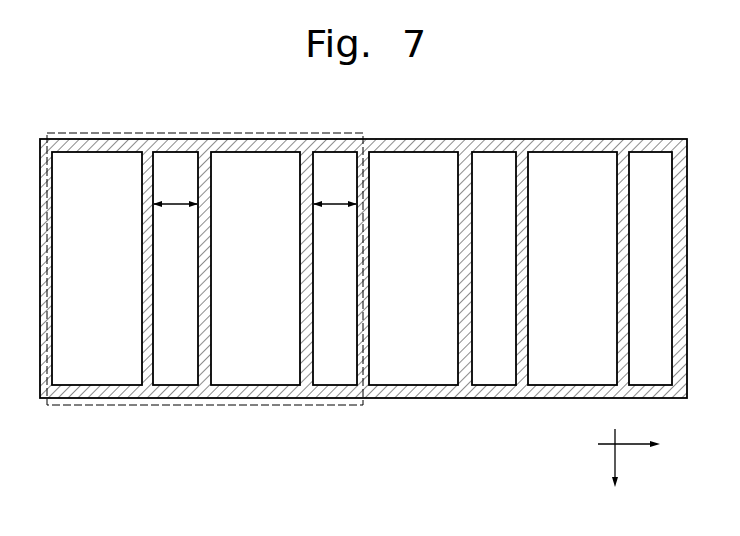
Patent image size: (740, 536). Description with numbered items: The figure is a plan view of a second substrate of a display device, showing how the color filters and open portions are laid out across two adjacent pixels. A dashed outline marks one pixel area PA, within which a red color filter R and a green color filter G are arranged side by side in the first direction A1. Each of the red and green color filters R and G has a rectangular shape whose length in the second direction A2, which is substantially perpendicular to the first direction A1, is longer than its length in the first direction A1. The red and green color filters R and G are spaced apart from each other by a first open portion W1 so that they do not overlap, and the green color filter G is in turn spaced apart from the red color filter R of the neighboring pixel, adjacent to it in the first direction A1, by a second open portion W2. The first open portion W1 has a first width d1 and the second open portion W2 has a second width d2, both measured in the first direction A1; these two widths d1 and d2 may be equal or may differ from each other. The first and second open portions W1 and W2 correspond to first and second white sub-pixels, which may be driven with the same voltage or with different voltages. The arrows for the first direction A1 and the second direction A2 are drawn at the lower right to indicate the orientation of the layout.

The red color filter R is at (255, 268).
The first open portion W1 is at (334, 268).
The green color filter G is at (414, 268).
The second open portion W2 is at (492, 268).
The first width d1 is at (175, 215).
The second width d2 is at (335, 215).
The pixel area PA is at (262, 405).
The first direction A1 is at (641, 444).
The second direction A2 is at (615, 469).